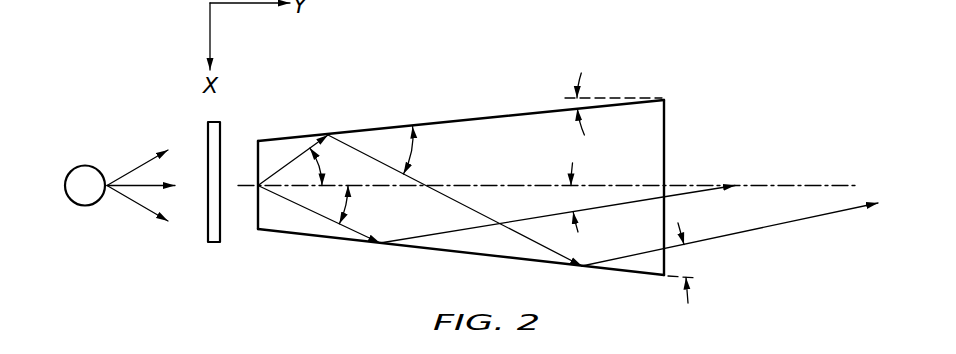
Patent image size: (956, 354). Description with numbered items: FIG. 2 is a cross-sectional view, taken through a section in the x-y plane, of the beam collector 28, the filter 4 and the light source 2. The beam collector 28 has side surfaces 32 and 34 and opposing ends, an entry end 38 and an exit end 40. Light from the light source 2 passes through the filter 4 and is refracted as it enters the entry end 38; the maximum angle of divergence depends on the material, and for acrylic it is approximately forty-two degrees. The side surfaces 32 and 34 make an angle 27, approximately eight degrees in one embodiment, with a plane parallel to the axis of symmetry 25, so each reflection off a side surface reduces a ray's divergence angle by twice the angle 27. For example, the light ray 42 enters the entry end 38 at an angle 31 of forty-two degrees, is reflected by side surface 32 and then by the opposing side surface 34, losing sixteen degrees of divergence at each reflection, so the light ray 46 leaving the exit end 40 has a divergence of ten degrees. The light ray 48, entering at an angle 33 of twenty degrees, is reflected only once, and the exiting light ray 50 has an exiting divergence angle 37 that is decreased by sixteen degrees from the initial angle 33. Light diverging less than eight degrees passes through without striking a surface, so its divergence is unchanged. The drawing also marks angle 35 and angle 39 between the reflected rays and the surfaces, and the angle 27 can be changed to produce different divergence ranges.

The light source 2 is at (87, 164).
The filter 4 is at (208, 228).
The axis of symmetry 25 is at (787, 185).
The angle 27 is at (567, 99).
The beam collector 28 is at (466, 179).
The angle 31 is at (321, 166).
The side surface 32 is at (360, 131).
The angle 33 is at (348, 207).
The side surface 34 is at (355, 242).
The reflection angle at top surface 35 is at (435, 151).
The exiting divergence angle 37 is at (566, 198).
The entry end 38 is at (258, 213).
The exit angle of lower ray 39 is at (692, 262).
The exit end 40 is at (666, 112).
The light ray 42 is at (287, 148).
The light ray 46 is at (832, 212).
The light ray 48 is at (320, 214).
The exiting light ray 50 is at (652, 198).